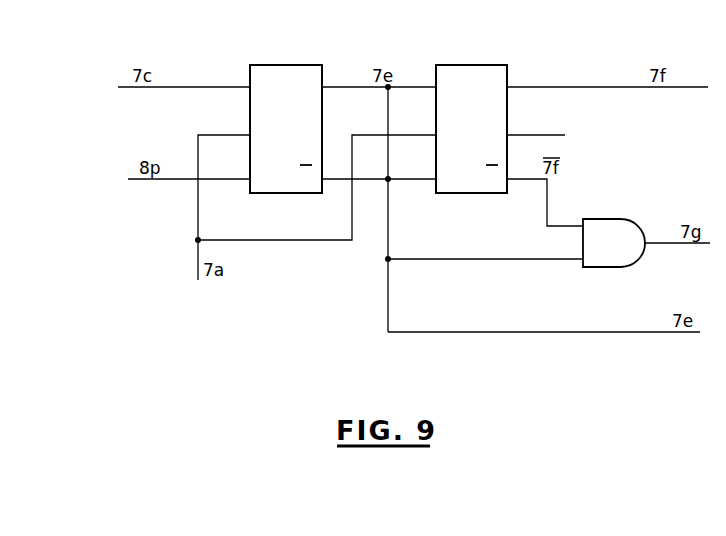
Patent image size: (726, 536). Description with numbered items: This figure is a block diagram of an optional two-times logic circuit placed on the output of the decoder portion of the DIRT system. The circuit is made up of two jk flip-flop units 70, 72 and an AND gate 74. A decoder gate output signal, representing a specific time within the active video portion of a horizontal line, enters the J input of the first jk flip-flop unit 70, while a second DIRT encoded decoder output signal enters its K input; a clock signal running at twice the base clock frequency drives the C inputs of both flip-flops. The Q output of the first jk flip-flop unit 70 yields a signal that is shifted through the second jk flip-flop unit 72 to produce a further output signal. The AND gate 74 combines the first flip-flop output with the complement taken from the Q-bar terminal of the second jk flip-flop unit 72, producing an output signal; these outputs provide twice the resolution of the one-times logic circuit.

The jk flip-flop unit 70 is at (273, 65).
The jk flip-flop unit 72 is at (458, 65).
The AND gate 74 is at (602, 219).